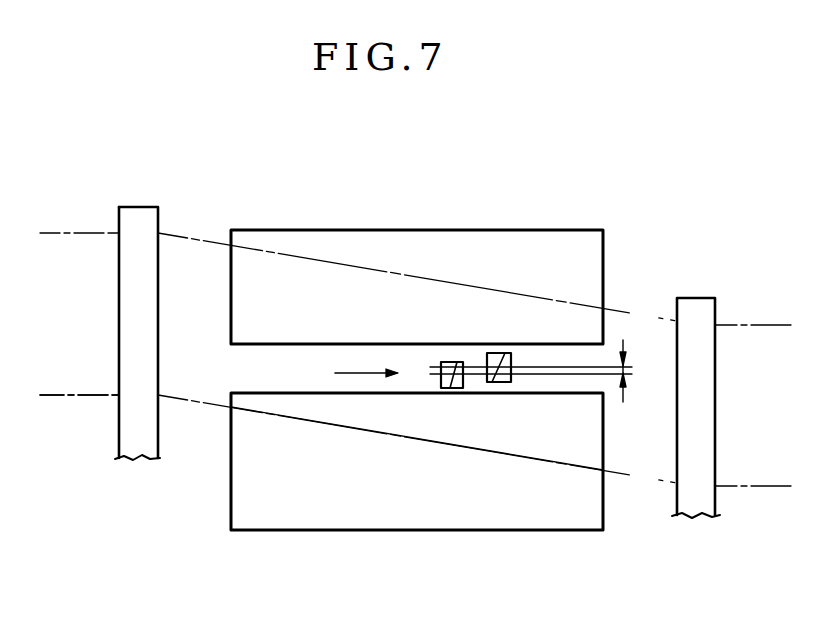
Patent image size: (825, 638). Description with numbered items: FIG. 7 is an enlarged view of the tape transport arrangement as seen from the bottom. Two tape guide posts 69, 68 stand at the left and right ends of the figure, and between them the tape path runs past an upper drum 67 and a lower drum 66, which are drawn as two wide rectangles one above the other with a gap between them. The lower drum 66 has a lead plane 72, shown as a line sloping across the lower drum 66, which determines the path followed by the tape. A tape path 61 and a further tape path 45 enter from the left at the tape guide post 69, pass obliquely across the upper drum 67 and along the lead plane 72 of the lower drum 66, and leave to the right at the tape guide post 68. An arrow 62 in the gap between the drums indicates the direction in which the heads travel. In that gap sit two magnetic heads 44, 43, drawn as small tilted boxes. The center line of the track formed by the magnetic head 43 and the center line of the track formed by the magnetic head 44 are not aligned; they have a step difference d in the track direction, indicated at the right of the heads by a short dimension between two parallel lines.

The incident light beam 61 is at (95, 312).
The incident light beam component 45 is at (83, 378).
The tape guide post 69 is at (140, 212).
The tape guide post 68 is at (703, 303).
The upper drum 67 is at (331, 234).
The lower drum 66 is at (427, 515).
The lead plane 72 is at (300, 420).
The light propagation direction 62 is at (353, 373).
The magnetic head 44 is at (457, 368).
The magnetic head 43 is at (502, 357).
The step difference d is at (634, 371).